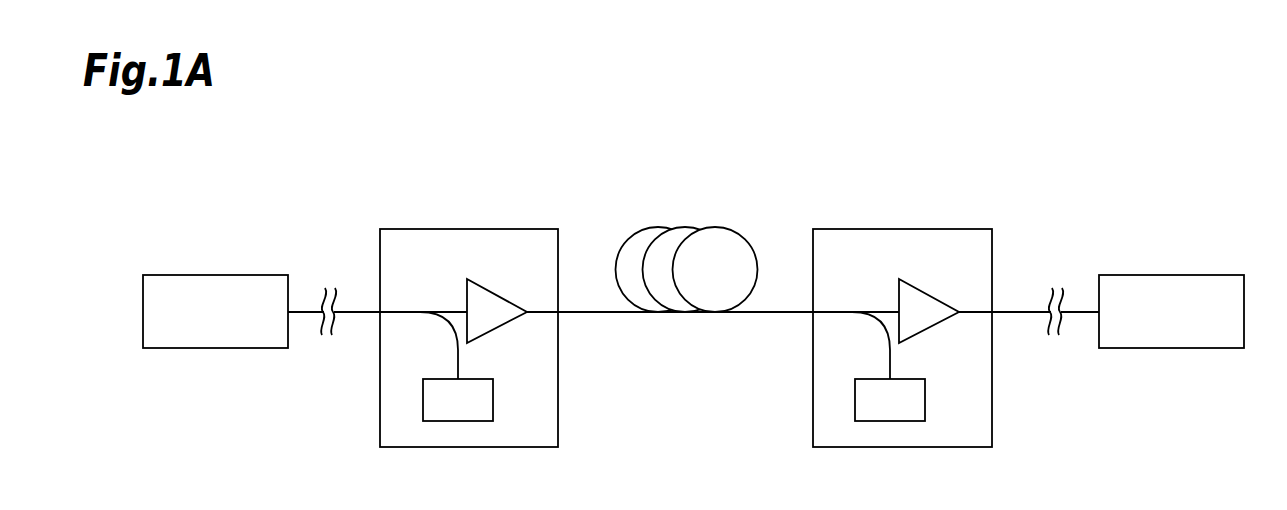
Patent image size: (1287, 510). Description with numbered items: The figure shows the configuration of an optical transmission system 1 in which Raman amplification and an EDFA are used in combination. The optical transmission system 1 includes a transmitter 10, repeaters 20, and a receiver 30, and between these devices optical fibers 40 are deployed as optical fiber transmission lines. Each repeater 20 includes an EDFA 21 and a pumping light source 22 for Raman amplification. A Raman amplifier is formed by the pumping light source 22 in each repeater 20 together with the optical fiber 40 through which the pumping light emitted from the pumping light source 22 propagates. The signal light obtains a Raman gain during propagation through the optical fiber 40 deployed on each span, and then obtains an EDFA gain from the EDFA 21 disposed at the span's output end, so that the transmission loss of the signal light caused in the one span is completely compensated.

The optical transmission system 1 is at (781, 168).
The transmitter 10 is at (222, 275).
The repeater 20 is at (502, 229).
The EDFA 21 is at (498, 292).
The pumping light source 22 is at (494, 398).
The receiver 30 is at (1203, 275).
The optical fiber 40 is at (353, 310).